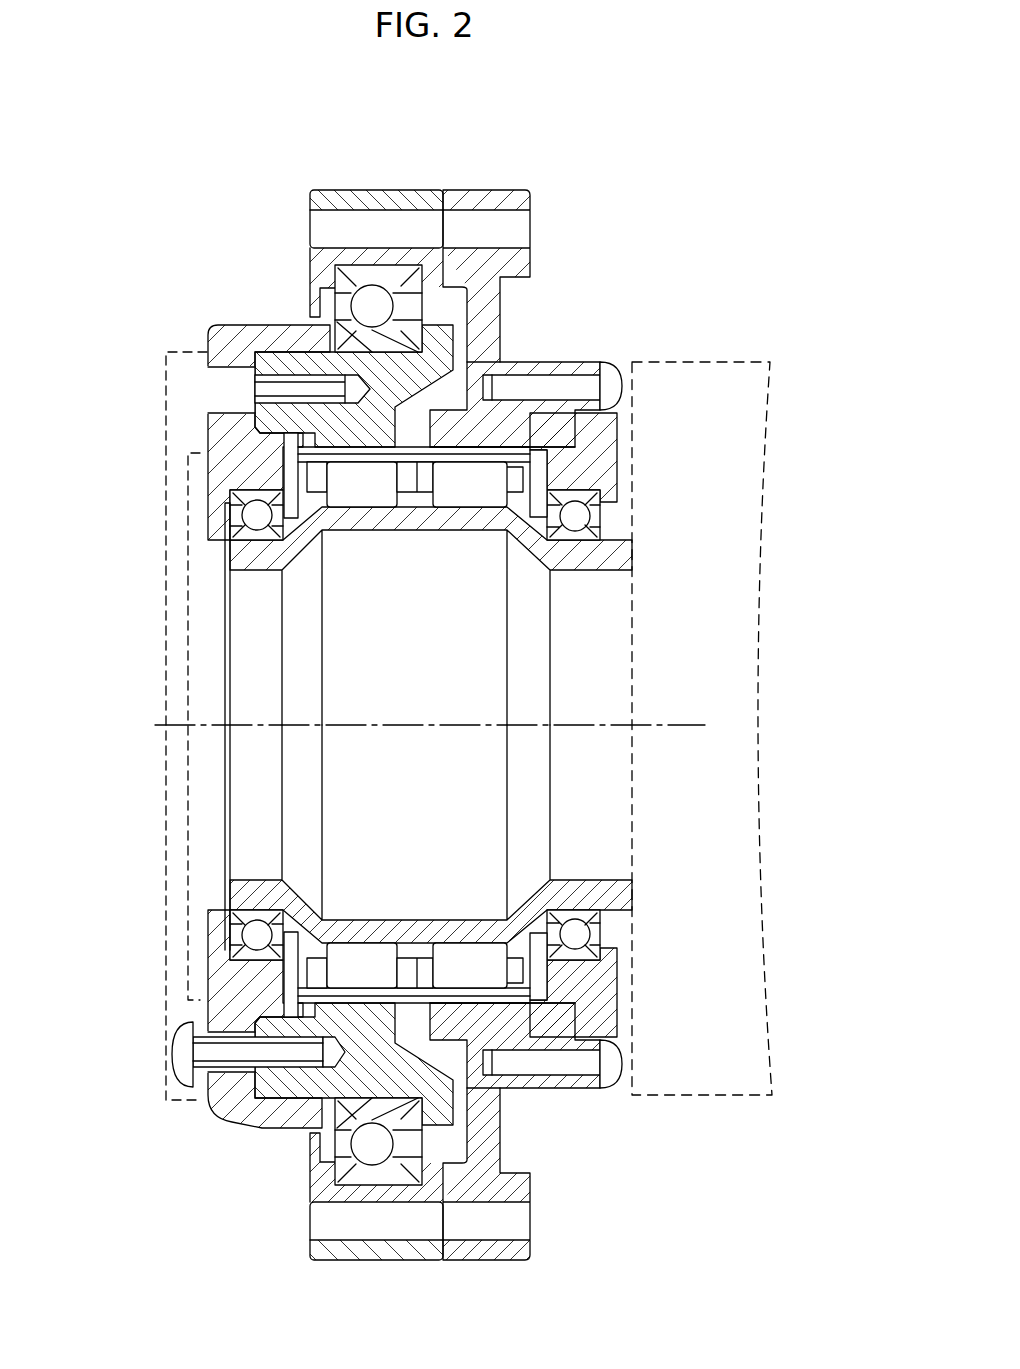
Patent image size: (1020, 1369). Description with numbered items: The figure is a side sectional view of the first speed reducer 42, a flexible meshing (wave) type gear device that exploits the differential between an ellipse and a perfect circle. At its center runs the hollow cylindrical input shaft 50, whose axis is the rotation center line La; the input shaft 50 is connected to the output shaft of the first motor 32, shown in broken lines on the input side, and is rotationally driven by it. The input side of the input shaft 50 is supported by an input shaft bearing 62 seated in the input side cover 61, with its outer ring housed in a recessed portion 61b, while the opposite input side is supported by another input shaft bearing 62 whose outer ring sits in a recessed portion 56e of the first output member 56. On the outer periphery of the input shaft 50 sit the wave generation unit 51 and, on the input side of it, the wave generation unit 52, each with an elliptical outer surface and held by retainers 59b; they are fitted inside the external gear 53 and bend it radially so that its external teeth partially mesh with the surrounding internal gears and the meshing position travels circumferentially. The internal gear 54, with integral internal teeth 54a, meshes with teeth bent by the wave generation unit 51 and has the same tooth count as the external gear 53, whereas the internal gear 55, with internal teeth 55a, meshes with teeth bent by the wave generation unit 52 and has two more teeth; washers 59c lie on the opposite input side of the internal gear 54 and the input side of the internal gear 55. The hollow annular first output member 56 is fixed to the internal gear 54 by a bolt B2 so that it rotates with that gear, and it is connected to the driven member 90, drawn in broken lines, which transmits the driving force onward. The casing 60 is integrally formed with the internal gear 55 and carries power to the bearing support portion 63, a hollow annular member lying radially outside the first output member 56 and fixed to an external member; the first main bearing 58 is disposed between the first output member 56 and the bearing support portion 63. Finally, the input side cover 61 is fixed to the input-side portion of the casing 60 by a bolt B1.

The first speed reducer 42 is at (568, 139).
The first motor 32 is at (703, 360).
The input shaft 50 is at (597, 565).
The wave generation unit 51 is at (357, 495).
The wave generation unit 52 is at (470, 495).
The external gear 53 is at (415, 482).
The internal gear 54 is at (355, 420).
The internal teeth 54a is at (268, 375).
The internal gear 55 is at (510, 432).
The internal teeth 55a is at (485, 440).
The first output member 56 is at (225, 445).
The recessed portion 56e is at (240, 478).
The first main bearing 58 is at (368, 305).
The retainer 59b is at (435, 957).
The washer 59c is at (300, 953).
The casing 60 is at (525, 265).
The input side cover 61 is at (612, 455).
The recessed portion 61b is at (595, 470).
The input shaft bearing 62 is at (257, 518).
The bearing support portion 63 is at (320, 200).
The driven member 90 is at (165, 370).
The bolt B1 is at (617, 385).
The bolt B2 is at (185, 1052).
The rotation center line La is at (662, 722).